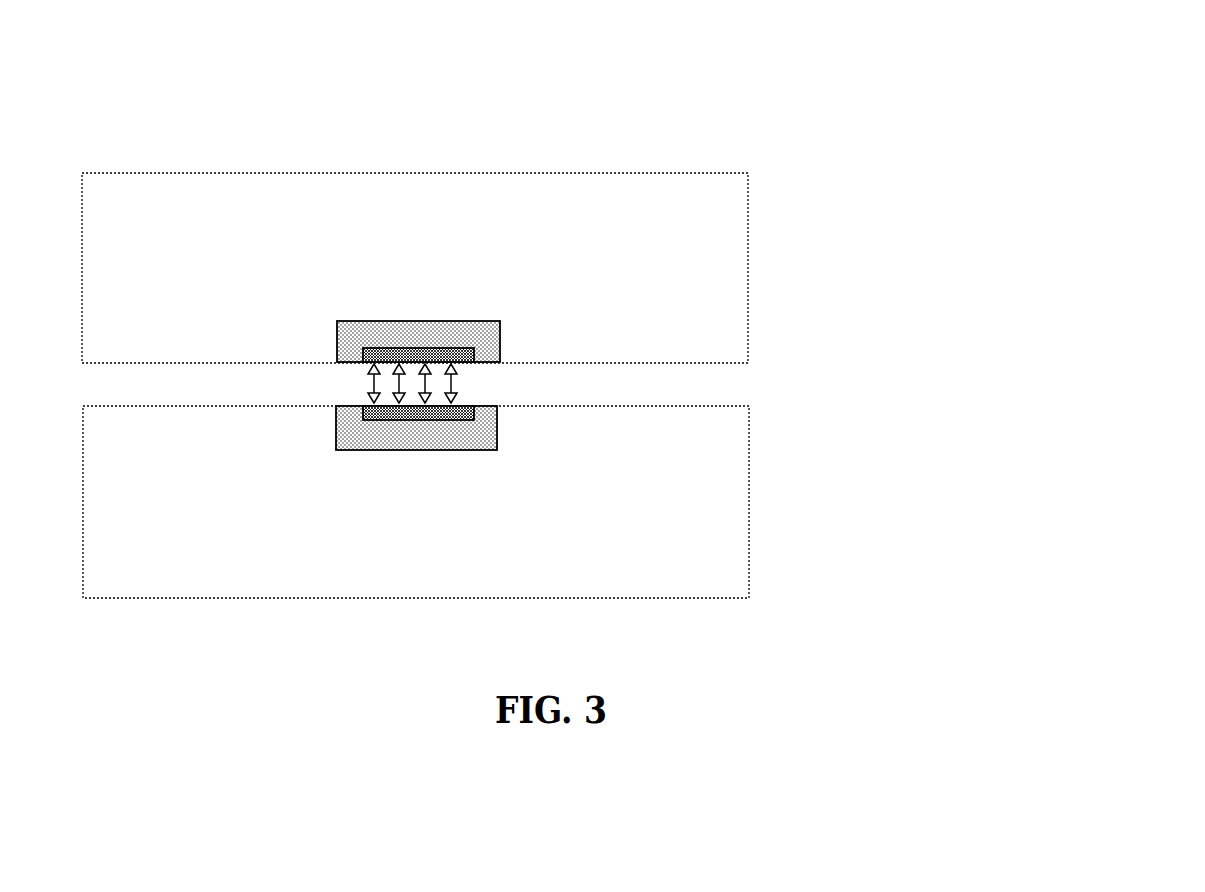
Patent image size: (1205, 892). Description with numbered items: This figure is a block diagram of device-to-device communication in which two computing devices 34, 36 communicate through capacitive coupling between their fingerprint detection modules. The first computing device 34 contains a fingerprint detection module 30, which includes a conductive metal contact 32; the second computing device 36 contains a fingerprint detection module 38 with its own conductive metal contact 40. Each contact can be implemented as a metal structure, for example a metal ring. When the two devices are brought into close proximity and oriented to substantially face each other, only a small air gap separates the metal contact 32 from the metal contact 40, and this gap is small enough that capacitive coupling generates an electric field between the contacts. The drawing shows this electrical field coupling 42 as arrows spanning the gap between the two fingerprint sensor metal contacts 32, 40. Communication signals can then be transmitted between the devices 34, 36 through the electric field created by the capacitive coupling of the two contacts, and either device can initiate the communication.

The fingerprint detection module 30 is at (412, 332).
The conductive contact 32 is at (367, 352).
The device 34 is at (608, 190).
The device 36 is at (682, 529).
The fingerprint detection module 38 is at (347, 439).
The conductive contact 40 is at (363, 417).
The electrical field coupling between the two fingerprint sensor metal contacts 42 is at (457, 388).